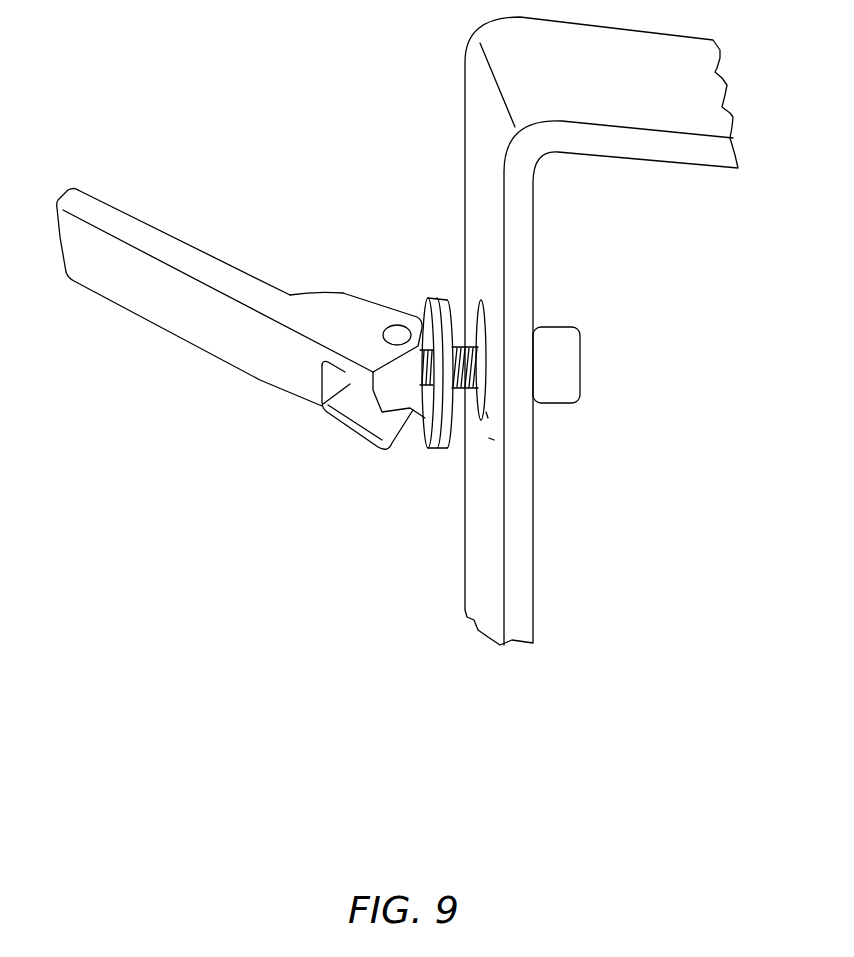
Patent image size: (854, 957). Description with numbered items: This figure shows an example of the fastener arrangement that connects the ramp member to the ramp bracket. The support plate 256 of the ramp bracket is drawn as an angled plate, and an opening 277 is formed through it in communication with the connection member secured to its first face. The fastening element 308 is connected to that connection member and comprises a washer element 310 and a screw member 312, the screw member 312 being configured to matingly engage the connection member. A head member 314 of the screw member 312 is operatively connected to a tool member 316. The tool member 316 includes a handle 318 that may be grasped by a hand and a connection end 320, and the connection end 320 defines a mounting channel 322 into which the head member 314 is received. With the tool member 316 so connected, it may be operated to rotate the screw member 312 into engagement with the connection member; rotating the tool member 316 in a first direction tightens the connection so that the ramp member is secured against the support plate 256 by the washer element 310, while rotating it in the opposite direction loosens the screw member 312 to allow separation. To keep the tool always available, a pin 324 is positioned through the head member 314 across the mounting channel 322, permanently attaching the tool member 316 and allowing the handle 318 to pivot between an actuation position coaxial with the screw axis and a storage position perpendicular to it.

The support plate 256 is at (463, 250).
The washer element 310 is at (450, 320).
The screw member 312 is at (486, 330).
The opening 277 is at (488, 415).
The fastening element 308 is at (489, 438).
The handle 318 is at (174, 320).
The tool member 316 is at (290, 296).
The connection end 320 is at (362, 349).
The pin 324 is at (398, 333).
The head member 314 is at (405, 392).
The mounting channel 322 is at (332, 380).